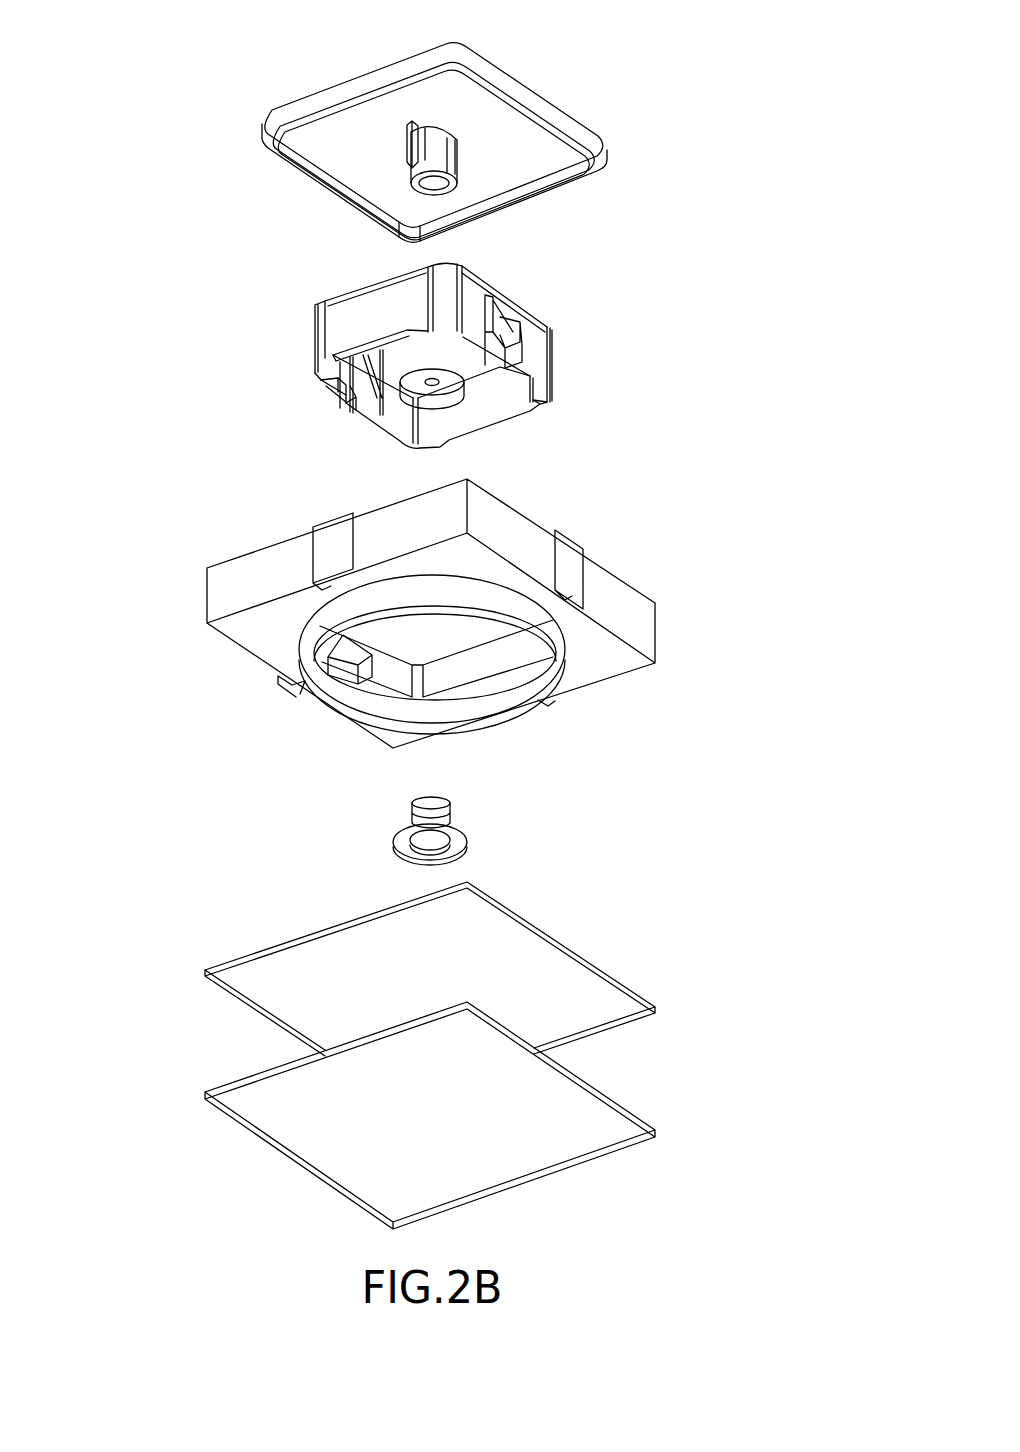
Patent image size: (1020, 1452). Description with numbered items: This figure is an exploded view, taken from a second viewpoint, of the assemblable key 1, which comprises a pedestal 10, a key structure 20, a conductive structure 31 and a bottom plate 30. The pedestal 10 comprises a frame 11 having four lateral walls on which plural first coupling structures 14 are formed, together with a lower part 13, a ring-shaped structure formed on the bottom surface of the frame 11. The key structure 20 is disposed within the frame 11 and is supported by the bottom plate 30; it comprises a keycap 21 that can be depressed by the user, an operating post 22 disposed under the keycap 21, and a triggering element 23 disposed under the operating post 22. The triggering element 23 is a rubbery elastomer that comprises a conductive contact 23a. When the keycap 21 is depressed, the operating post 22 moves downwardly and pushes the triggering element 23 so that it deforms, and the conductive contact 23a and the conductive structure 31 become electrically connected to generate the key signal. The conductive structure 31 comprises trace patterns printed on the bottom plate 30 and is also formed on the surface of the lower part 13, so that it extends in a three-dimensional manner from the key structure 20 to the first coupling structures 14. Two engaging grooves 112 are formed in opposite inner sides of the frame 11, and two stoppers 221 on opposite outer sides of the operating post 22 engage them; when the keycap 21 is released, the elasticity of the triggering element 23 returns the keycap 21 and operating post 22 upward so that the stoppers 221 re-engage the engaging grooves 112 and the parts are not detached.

The assemblable key 1 is at (253, 37).
The pedestal 10 is at (643, 573).
The frame 11 is at (240, 573).
The engaging groove 112 is at (352, 665).
The lower part 13 is at (550, 627).
The first coupling structure 14 is at (333, 530).
The key structure 20 is at (203, 240).
The keycap 21 is at (535, 103).
The operating post 22 is at (375, 300).
The stopper 221 is at (352, 395).
The triggering element 23 is at (455, 820).
The conductive contact 23a is at (430, 836).
The bottom plate 30 is at (250, 1077).
The conductive structure 31 is at (287, 940).